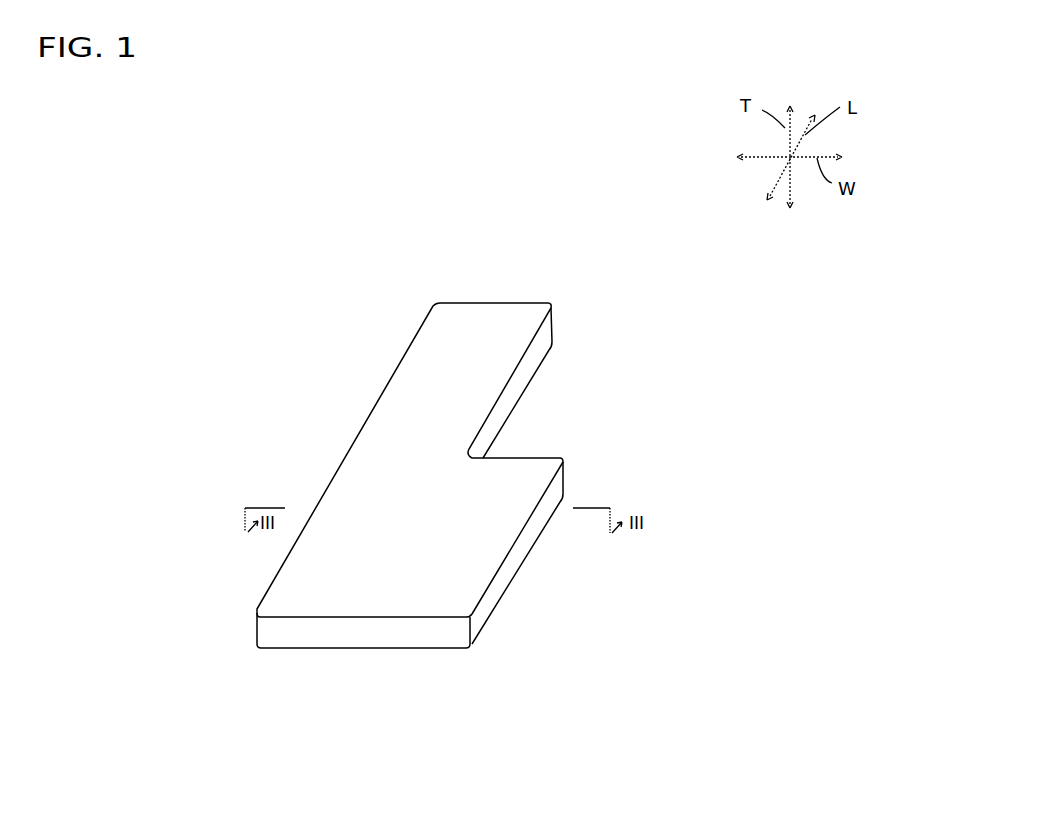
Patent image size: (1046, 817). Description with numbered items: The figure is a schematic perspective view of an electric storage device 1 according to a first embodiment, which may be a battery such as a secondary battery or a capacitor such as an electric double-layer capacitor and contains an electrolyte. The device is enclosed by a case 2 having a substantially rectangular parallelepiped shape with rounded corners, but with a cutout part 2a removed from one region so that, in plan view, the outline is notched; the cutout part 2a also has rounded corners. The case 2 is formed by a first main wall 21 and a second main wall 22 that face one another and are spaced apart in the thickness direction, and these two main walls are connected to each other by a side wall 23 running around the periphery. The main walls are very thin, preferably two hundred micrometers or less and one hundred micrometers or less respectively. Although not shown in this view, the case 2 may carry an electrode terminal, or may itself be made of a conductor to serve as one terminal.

The electric storage device 1 is at (535, 255).
The case 2 is at (440, 531).
The cutout part 2a is at (493, 422).
The first main wall 21 is at (397, 407).
The second main wall 22 is at (370, 648).
The side wall 23 is at (305, 635).